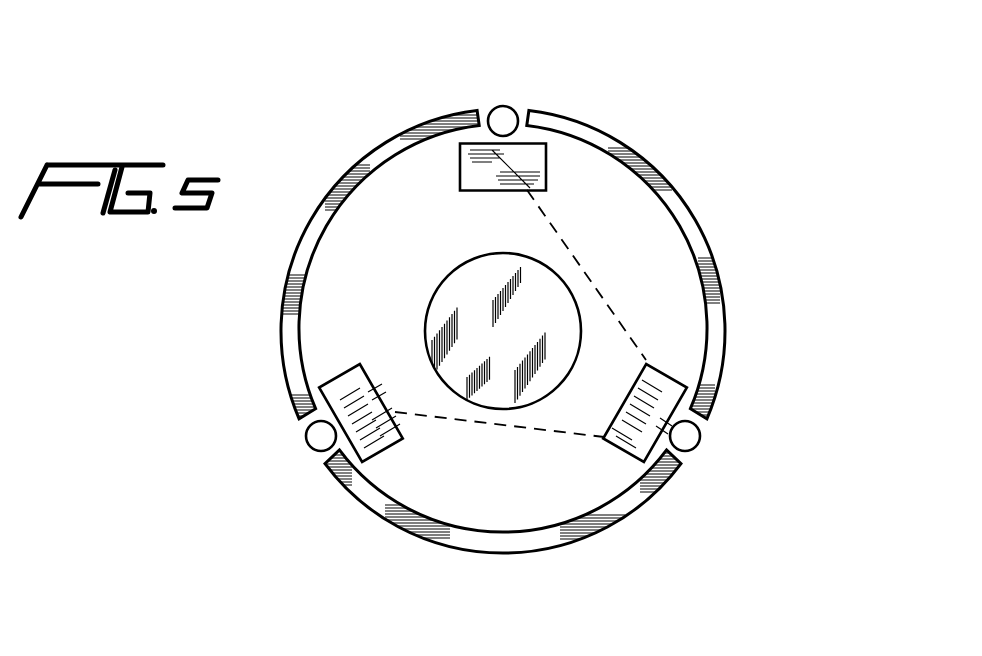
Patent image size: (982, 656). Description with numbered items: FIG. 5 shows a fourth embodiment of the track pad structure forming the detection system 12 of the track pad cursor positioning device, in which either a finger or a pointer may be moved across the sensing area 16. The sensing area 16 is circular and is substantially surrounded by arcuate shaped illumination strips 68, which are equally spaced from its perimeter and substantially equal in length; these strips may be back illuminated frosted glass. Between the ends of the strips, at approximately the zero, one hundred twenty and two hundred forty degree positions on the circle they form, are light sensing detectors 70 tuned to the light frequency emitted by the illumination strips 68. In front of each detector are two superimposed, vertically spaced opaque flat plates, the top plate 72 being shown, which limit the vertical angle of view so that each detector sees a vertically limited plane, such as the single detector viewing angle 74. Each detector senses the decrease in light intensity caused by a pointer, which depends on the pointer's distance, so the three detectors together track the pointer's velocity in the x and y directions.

The detection system 12 is at (714, 517).
The sensing area 16 is at (445, 297).
The illumination strips 68 is at (708, 262).
The light sensing detectors 70 is at (507, 112).
The top plate 72 is at (537, 147).
The single detector viewing angle 74 is at (620, 311).